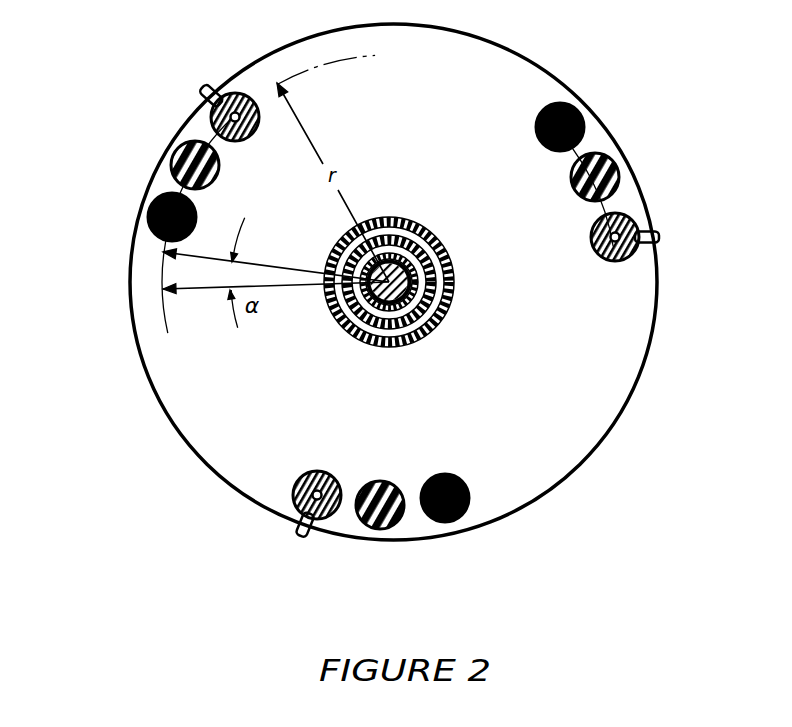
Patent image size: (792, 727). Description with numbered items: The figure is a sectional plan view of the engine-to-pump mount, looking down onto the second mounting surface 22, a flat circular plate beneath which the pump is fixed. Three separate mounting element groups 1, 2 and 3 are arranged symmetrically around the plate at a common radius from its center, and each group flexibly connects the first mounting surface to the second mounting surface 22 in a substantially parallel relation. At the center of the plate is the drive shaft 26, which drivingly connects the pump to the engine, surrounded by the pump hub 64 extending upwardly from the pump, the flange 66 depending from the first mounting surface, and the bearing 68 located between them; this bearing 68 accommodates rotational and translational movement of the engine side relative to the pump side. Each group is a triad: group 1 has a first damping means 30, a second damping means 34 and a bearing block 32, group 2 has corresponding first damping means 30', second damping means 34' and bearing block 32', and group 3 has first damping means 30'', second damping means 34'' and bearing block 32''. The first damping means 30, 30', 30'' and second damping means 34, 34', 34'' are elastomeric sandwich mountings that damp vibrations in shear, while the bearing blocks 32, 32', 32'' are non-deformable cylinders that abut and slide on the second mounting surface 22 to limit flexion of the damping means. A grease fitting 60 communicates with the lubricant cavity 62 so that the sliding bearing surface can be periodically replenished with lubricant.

The mounting element group 1 is at (447, 570).
The mounting element group 2 is at (80, 88).
The mounting element group 3 is at (688, 95).
The second mounting surface 22 is at (627, 402).
The drive shaft 26 is at (410, 309).
The first damping means 30 is at (392, 525).
The bearing block 32 is at (290, 507).
The second damping means 34 is at (459, 516).
The first damping means 30' is at (153, 150).
The bearing block 32' is at (176, 105).
The second damping means 34' is at (146, 197).
The first damping means 30'' is at (632, 157).
The bearing block 32'' is at (646, 205).
The second damping means 34'' is at (607, 115).
The grease fitting 60 is at (305, 527).
The lubricant cavity 62 is at (312, 475).
The pump hub 64 is at (415, 248).
The flange 66 is at (457, 275).
The bearing 68 is at (446, 253).